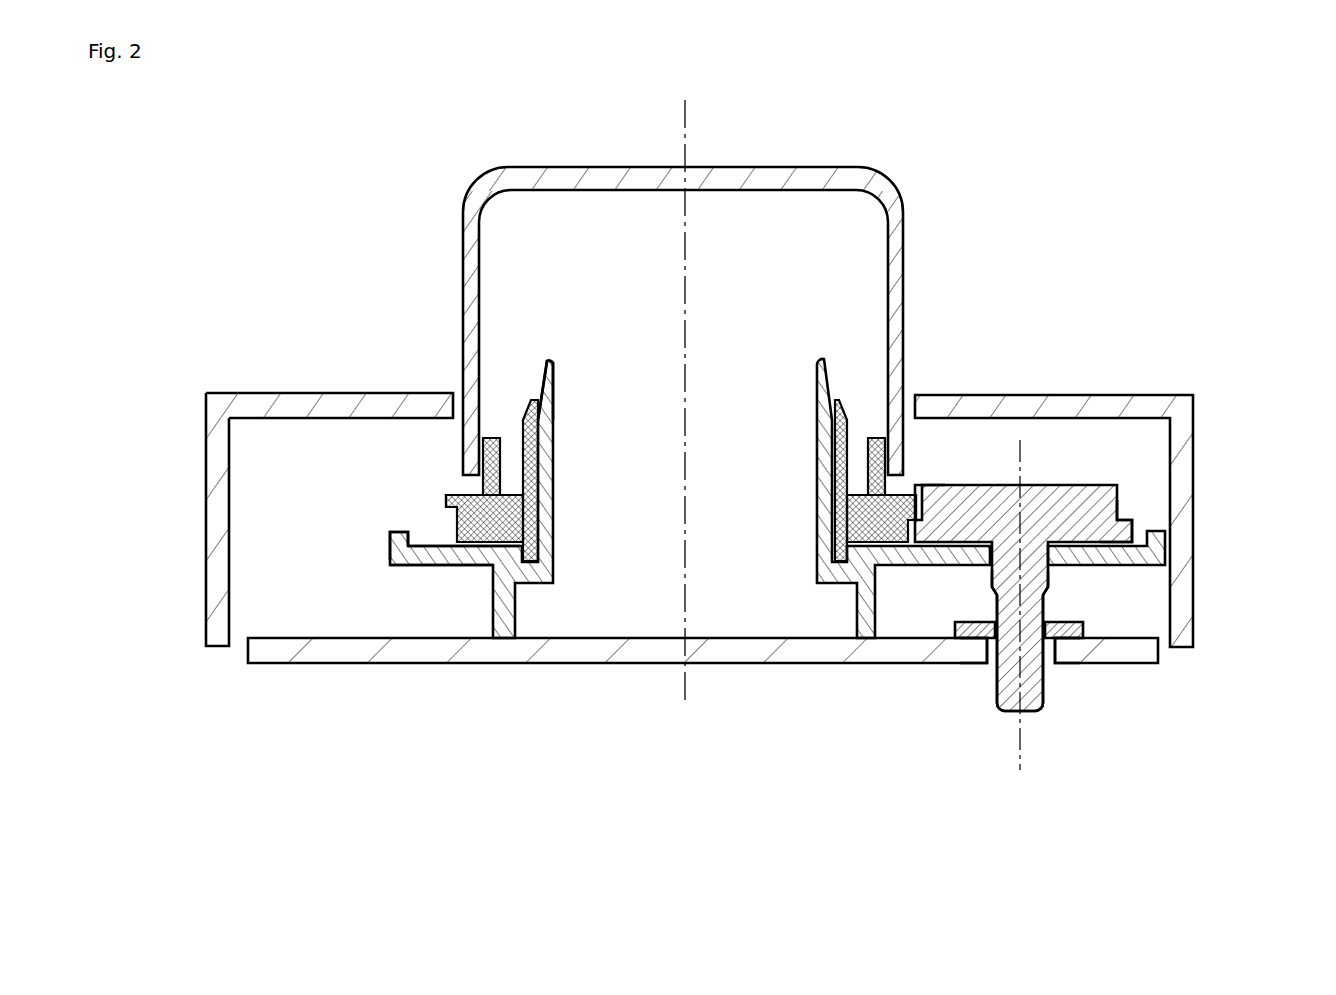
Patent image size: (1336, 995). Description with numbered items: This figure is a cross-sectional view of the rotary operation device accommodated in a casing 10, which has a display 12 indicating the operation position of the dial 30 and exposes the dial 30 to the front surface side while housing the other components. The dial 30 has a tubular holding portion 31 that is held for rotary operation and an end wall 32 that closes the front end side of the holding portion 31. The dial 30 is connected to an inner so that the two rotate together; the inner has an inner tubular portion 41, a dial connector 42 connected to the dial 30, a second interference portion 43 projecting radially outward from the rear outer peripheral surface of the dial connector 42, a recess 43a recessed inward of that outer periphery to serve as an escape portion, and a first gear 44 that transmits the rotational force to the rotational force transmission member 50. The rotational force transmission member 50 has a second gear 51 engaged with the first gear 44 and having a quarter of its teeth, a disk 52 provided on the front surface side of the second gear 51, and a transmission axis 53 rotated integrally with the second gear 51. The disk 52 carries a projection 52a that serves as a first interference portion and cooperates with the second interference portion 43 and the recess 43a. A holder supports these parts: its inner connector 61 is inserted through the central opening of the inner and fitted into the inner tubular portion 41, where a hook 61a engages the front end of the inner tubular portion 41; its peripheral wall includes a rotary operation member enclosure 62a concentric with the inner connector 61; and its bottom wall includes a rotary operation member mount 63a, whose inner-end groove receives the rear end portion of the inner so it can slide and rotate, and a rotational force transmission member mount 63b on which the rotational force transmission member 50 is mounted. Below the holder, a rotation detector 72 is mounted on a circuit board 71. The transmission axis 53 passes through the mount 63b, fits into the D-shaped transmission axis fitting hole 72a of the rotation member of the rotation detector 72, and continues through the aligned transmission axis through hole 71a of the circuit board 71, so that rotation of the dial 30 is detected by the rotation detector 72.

The casing 10 is at (699, 477).
The display 12 is at (450, 400).
The dial 30 is at (715, 273).
The holding portion 31 is at (910, 295).
The end wall 32 is at (798, 167).
The inner tubular portion 41 is at (525, 401).
The dial connector 42 is at (483, 437).
The second interference portion 43 is at (446, 498).
The recess 43a is at (909, 494).
The first gear 44 is at (455, 517).
The rotational force transmission member 50 is at (1118, 549).
The second gear 51 is at (1135, 533).
The disk 52 is at (1118, 486).
The projection 52a is at (926, 488).
The transmission axis 53 is at (1047, 610).
The inner connector 61 is at (453, 428).
The hook 61a is at (541, 362).
The rotary operation member enclosure 62a is at (390, 533).
The rotary operation member mount 63a is at (446, 556).
The rotational force transmission member mount 63b is at (927, 560).
The circuit board 71 is at (703, 690).
The transmission axis through hole 71a is at (1050, 650).
The rotation detector 72 is at (955, 631).
The transmission axis fitting hole 72a is at (995, 640).